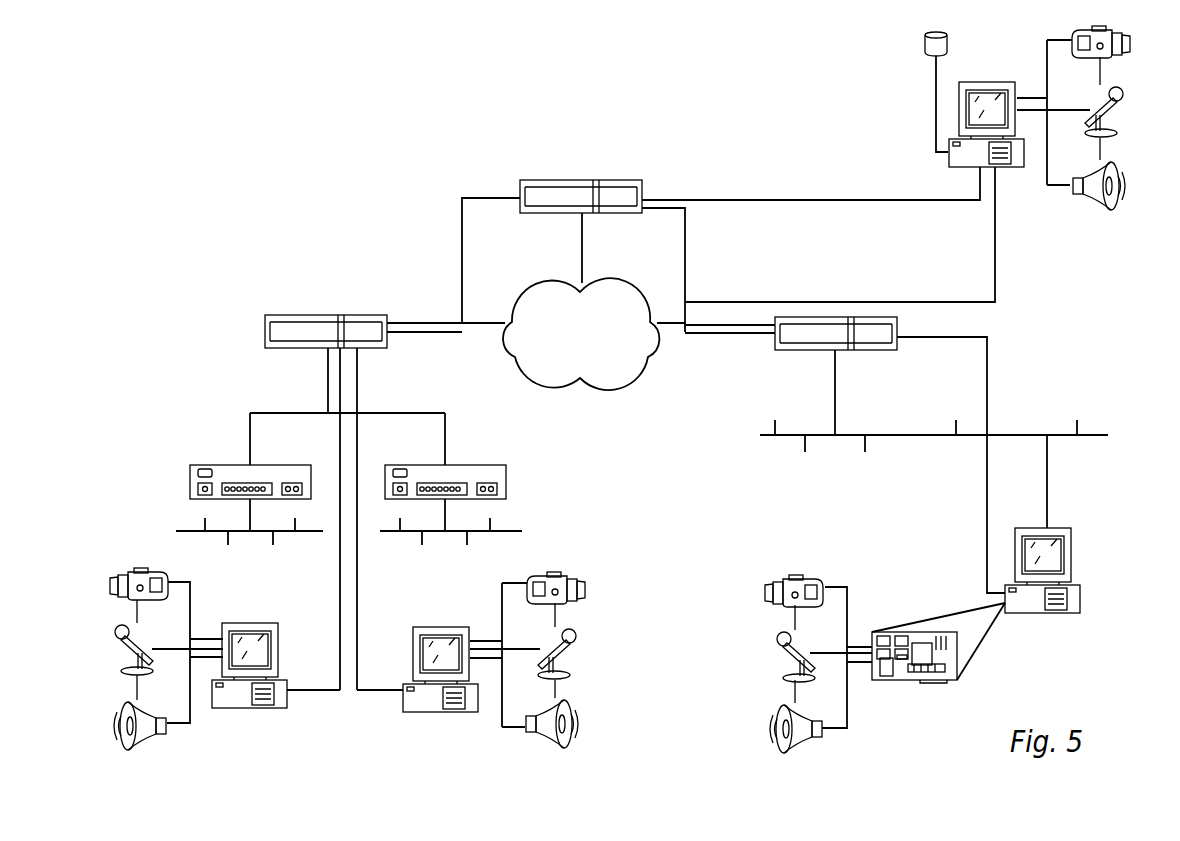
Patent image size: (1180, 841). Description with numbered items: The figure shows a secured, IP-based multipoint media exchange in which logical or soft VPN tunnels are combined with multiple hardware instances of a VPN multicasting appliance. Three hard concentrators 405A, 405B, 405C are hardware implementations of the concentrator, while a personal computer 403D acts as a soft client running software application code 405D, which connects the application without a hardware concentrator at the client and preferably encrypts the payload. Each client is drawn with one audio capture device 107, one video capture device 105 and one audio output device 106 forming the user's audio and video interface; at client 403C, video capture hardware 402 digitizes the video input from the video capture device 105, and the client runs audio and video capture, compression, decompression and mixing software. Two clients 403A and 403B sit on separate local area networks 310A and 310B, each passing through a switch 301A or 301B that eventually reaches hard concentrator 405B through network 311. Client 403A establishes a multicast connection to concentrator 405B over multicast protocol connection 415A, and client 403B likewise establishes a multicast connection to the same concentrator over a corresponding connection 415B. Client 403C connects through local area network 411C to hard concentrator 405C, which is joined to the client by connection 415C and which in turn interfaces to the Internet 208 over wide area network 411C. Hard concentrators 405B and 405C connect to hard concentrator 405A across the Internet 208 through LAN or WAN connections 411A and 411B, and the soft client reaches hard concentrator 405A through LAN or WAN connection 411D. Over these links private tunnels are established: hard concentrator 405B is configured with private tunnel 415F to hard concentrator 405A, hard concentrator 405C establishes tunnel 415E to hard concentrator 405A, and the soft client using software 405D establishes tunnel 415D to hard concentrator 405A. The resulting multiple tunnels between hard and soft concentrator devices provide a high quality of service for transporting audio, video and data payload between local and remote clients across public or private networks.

The video capture device 105 is at (110, 583).
The audio output device 106 is at (120, 706).
The audio capture device 107 is at (123, 650).
The Internet 208 is at (600, 386).
The switch 301A is at (223, 463).
The switch 301B is at (474, 463).
The local network interface 310A is at (182, 530).
The local network interface 310B is at (511, 530).
The network 311 is at (285, 412).
The video capture hardware 402 is at (912, 681).
The client 403A is at (253, 708).
The client 403B is at (432, 712).
The client 403C is at (1049, 527).
The PC 403D is at (992, 81).
The hard concentrator 405A is at (568, 180).
The hard concentrator 405B is at (312, 313).
The hard concentrator 405C is at (810, 352).
The software application code 405D is at (922, 52).
The LAN or WAN connection 411A is at (581, 243).
The LAN or WAN connection 411B is at (434, 322).
The local area network / wide area network 411C is at (736, 336).
The LAN or WAN connection 411D is at (925, 301).
The multicast protocol connection 415A is at (338, 441).
The connection line 415B is at (359, 441).
The connection line 415C is at (988, 360).
The tunnel 415D is at (748, 199).
The tunnel 415E is at (686, 252).
The private tunnel 415F is at (476, 197).